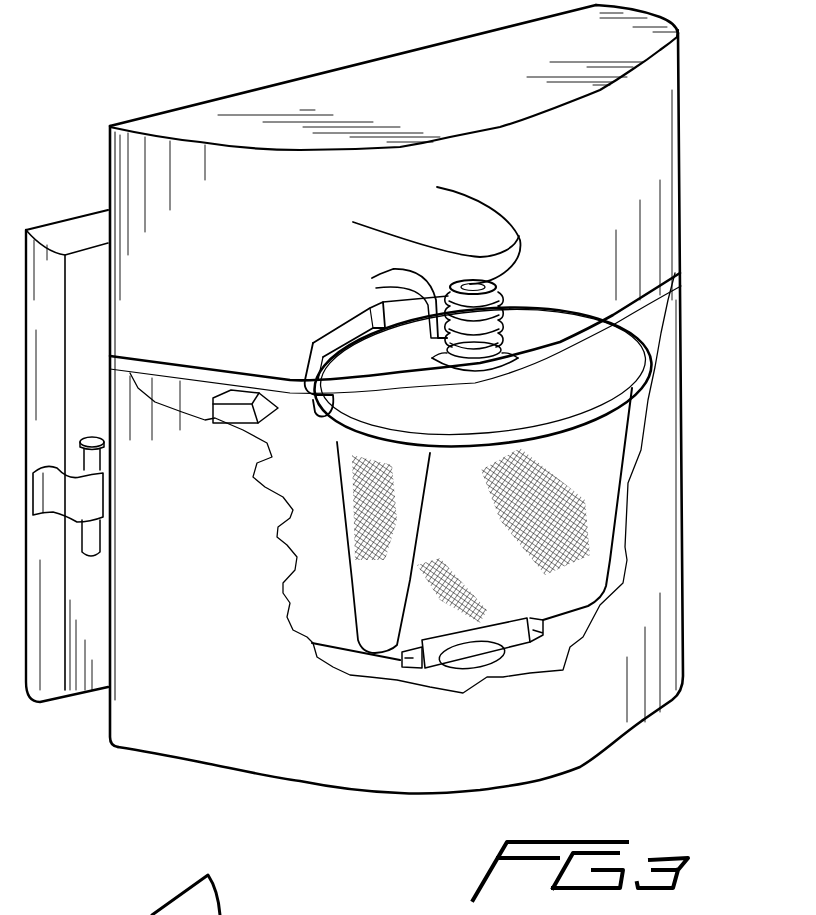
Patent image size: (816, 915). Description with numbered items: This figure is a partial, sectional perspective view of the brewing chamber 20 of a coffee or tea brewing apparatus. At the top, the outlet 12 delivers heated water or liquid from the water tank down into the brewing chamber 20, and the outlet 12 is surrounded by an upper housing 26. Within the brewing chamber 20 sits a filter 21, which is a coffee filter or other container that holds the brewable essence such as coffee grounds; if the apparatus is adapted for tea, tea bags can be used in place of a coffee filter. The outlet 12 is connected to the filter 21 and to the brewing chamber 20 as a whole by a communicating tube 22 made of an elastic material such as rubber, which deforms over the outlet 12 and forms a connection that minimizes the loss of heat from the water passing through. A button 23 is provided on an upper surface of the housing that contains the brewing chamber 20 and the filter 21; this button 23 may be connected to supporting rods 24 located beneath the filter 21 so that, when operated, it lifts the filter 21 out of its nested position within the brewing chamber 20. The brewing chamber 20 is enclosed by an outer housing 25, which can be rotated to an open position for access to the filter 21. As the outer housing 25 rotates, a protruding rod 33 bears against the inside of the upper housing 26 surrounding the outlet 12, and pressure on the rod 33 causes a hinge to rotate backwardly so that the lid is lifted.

The outlet 12 is at (473, 287).
The brewing chamber 20 is at (640, 401).
The filter 21 is at (596, 440).
The communicating tube 22 is at (518, 317).
The button 23 is at (220, 417).
The supporting rods 24 is at (405, 656).
The outer housing 25 is at (153, 710).
The upper housing 26 is at (665, 117).
The protruding rod 33 is at (315, 347).